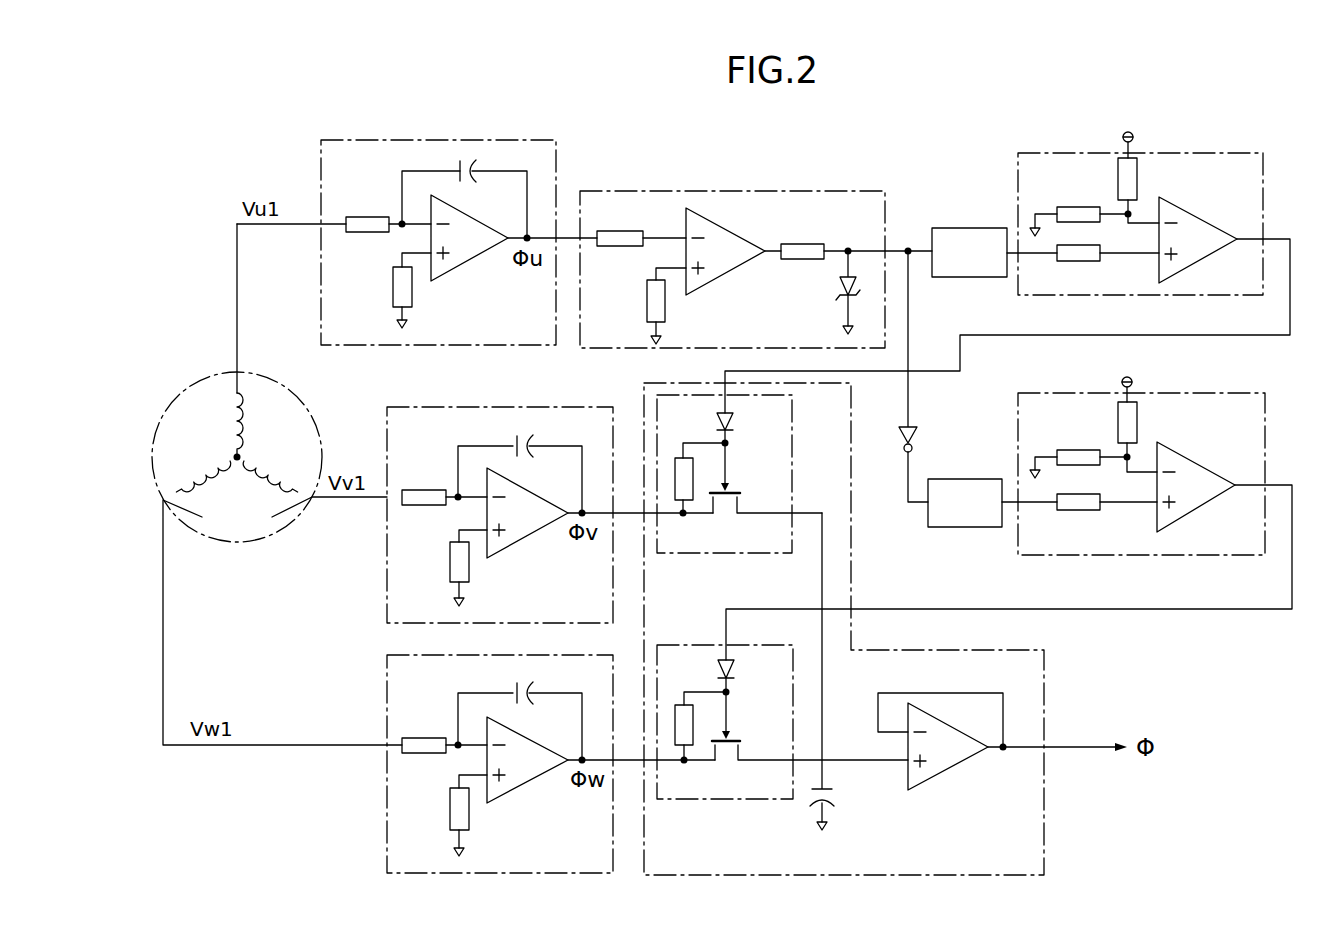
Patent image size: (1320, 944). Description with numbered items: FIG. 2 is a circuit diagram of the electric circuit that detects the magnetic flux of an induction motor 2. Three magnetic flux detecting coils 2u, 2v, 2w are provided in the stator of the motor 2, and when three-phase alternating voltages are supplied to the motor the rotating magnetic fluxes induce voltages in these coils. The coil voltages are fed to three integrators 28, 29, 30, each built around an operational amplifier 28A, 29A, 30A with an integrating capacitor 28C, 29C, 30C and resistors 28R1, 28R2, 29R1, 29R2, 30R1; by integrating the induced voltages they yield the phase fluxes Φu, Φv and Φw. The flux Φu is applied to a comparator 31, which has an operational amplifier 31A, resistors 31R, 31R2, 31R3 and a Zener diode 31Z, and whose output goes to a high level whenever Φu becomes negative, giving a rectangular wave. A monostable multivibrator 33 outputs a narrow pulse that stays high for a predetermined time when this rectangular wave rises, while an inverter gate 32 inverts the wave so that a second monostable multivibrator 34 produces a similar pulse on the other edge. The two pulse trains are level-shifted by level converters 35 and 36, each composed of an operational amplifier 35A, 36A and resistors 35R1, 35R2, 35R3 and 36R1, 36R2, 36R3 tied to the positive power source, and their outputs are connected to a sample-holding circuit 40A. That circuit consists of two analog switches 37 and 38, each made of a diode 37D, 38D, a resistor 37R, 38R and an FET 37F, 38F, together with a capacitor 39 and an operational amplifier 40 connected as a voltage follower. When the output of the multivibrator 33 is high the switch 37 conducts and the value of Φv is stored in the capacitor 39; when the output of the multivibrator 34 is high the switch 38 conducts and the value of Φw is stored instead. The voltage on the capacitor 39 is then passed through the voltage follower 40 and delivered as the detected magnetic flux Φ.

The induction motor 2 is at (207, 390).
The magnetic flux detecting coil 2u is at (248, 412).
The magnetic flux detecting coil 2v is at (266, 476).
The magnetic flux detecting coil 2w is at (195, 480).
The integrator 28 is at (558, 162).
The resistor 28R1 is at (363, 217).
The resistor 28R2 is at (393, 285).
The capacitor 28C is at (456, 163).
The operational amplifier 28A is at (478, 267).
The integrator 29 is at (506, 407).
The resistor 29R1 is at (426, 490).
The resistor 29R2 is at (450, 576).
The capacitor 29C is at (514, 436).
The operational amplifier 29A is at (526, 540).
The integrator 30 is at (387, 688).
The resistor 30R1 is at (426, 738).
The capacitor 30C is at (512, 686).
The operational amplifier 30A is at (538, 790).
The comparator 31 is at (679, 191).
The resistor 31R is at (617, 231).
The resistor 31R2 is at (647, 298).
The resistor 31R3 is at (816, 233).
The operational amplifier 31A is at (738, 270).
The Zener diode 31Z is at (840, 290).
The inverter gate 32 is at (917, 432).
The monostable multivibrator 33 is at (972, 228).
The monostable multivibrator 34 is at (970, 527).
The level converter 35 is at (1225, 160).
The resistor 35R1 is at (1084, 261).
The resistor 35R2 is at (1074, 207).
The resistor 35R3 is at (1137, 172).
The operational amplifier 35A is at (1202, 262).
The level converter 36 is at (1236, 400).
The resistor 36R1 is at (1084, 510).
The resistor 36R2 is at (1075, 450).
The resistor 36R3 is at (1137, 418).
The operational amplifier 36A is at (1192, 518).
The analog switch 37 is at (835, 421).
The resistor 37R is at (682, 452).
The diode 37D is at (736, 422).
The FET 37F is at (724, 514).
The analog switch 38 is at (707, 633).
The resistor 38R is at (680, 700).
The diode 38D is at (732, 676).
The FET 38F is at (726, 762).
The capacitor 39 is at (835, 798).
The operational amplifier 40 is at (960, 768).
The sample-holding circuit 40A is at (1046, 692).